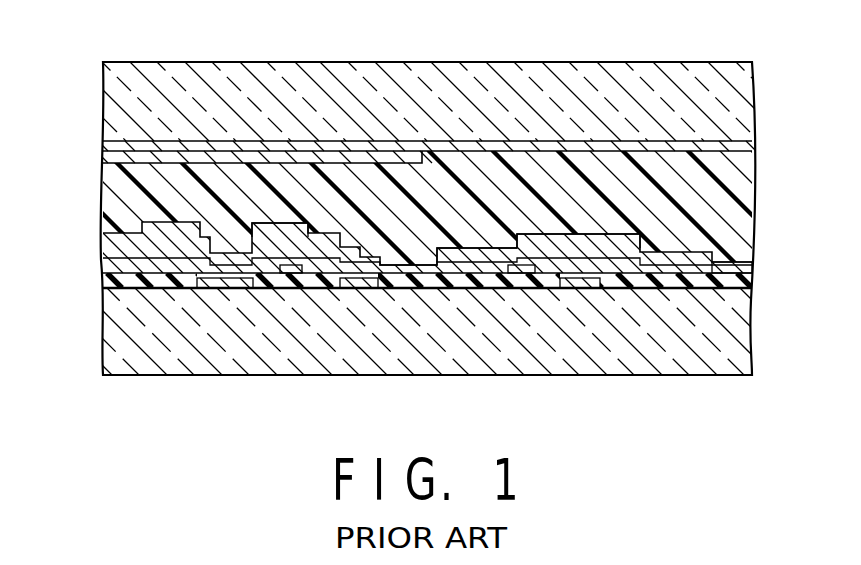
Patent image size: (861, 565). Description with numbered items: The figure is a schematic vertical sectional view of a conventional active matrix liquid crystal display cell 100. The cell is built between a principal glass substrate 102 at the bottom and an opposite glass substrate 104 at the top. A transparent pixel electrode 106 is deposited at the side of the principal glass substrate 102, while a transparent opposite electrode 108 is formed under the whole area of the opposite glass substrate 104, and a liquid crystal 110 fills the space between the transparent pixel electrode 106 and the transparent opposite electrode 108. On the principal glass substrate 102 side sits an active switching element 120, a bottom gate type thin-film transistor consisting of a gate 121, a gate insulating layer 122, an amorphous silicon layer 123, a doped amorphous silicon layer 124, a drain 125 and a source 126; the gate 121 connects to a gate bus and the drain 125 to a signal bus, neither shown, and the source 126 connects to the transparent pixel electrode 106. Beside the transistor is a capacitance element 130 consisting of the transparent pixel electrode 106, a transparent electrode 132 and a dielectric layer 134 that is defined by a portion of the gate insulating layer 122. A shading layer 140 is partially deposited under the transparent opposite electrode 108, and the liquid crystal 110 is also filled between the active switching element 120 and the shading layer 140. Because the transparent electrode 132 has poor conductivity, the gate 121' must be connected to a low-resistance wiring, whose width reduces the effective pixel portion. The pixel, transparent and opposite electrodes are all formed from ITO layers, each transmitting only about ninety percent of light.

The active matrix liquid crystal display cell 100 is at (723, 48).
The principal glass substrate 102 is at (684, 360).
The opposite glass substrate 104 is at (672, 74).
The transparent pixel electrode 106 is at (466, 248).
The transparent opposite electrode 108 is at (738, 142).
The liquid crystal 110 is at (713, 188).
The active switching element 120 is at (118, 258).
The gate 121 is at (225, 351).
The gate 121' is at (594, 351).
The gate insulating layer 122 is at (350, 290).
The amorphous silicon layer 123 is at (290, 290).
The doped amorphous silicon layer 124 is at (148, 284).
The drain 125 is at (115, 233).
The source 126 is at (279, 223).
The capacitance element 130 is at (736, 267).
The transparent electrode 132 is at (520, 290).
The dielectric layer 134 is at (600, 238).
The shading layer 140 is at (110, 160).